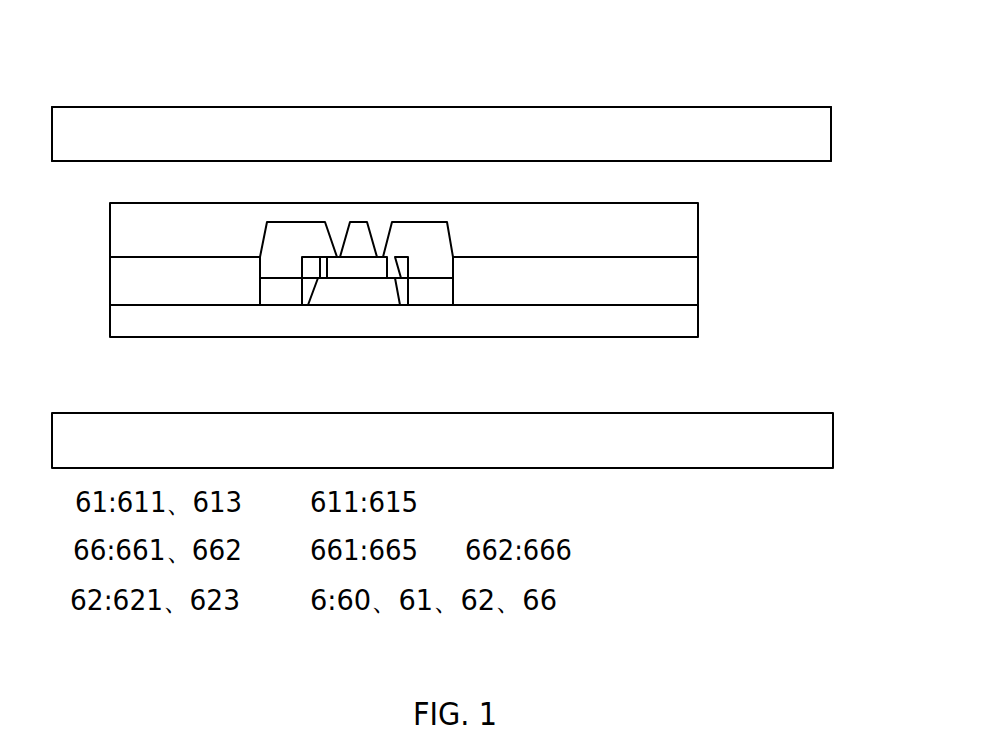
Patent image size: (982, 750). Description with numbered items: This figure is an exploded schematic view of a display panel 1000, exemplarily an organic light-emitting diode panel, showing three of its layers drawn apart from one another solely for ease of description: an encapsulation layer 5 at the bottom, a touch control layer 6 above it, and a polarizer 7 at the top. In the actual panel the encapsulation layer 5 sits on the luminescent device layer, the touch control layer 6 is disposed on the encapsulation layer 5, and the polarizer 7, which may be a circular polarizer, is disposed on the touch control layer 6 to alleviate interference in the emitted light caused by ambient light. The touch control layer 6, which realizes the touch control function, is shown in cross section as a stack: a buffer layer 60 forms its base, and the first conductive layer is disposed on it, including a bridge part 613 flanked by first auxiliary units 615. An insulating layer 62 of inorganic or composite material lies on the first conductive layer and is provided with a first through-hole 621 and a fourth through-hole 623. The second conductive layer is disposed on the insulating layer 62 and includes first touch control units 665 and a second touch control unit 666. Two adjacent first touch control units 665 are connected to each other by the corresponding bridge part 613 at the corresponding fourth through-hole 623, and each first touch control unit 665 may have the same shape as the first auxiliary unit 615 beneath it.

The display panel 1000 is at (441, 88).
The polarizer 7 is at (803, 133).
The encapsulation layer 5 is at (803, 442).
The touch control layer 6 is at (404, 270).
The buffer layer 60 is at (688, 328).
The bridge part 613 is at (352, 293).
The first auxiliary unit 615 is at (453, 297).
The insulating layer 62 is at (688, 276).
The first through-hole 621 is at (260, 278).
The fourth through-hole 623 is at (313, 270).
The first touch control unit 665 is at (438, 237).
The second touch control unit 666 is at (357, 230).